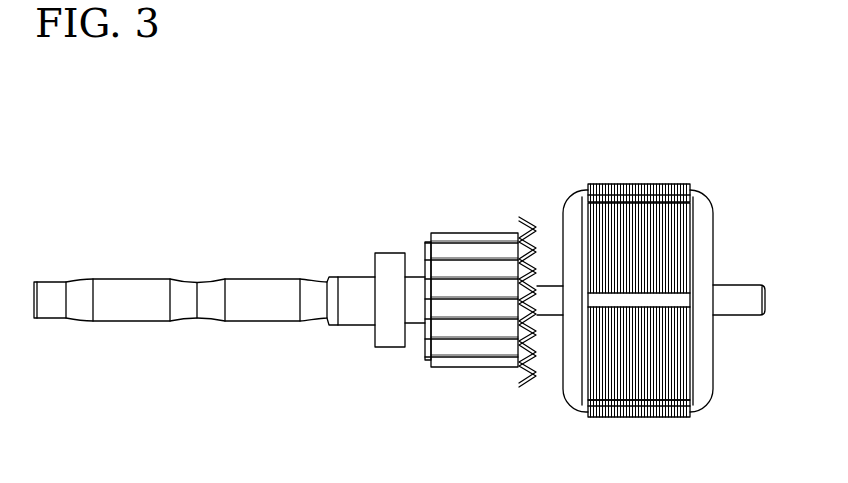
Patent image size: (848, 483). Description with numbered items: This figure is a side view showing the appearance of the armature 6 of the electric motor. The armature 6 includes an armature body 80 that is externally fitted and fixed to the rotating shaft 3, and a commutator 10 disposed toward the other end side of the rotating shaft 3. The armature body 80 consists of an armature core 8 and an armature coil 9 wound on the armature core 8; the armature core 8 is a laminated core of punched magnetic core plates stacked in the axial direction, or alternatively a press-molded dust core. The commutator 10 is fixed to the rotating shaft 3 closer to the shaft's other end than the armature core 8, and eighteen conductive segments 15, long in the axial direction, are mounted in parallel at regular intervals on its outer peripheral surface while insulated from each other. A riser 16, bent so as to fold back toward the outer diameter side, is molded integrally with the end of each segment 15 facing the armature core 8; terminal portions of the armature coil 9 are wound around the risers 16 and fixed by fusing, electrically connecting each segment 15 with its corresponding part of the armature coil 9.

The armature 6 is at (401, 199).
The rotating shaft 3 is at (736, 290).
The commutator 10 is at (476, 224).
The segment 15 is at (477, 350).
The riser 16 is at (528, 384).
The armature core 8 is at (671, 185).
The armature body 80 is at (565, 184).
The armature coil 9 is at (708, 196).